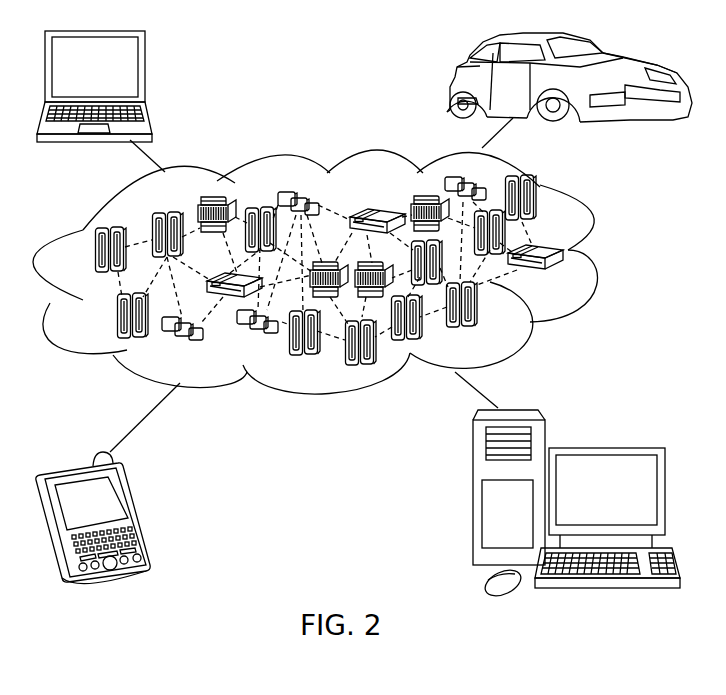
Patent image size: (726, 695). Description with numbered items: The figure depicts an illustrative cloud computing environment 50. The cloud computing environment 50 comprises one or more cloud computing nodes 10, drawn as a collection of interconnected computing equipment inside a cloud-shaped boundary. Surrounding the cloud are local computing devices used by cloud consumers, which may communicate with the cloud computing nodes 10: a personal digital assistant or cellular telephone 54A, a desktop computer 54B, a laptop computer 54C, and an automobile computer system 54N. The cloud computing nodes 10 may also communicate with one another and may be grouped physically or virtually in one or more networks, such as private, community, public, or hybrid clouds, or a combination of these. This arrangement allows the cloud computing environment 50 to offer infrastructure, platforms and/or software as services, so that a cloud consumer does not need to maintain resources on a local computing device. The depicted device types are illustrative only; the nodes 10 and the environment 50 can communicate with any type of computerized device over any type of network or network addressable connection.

The cloud computing environment 50 is at (607, 258).
The cloud computing node 10 is at (563, 275).
The personal digital assistant or cellular telephone 54A is at (138, 508).
The desktop computer 54B is at (605, 447).
The laptop computer 54C is at (143, 73).
The automobile computer system 54N is at (452, 84).